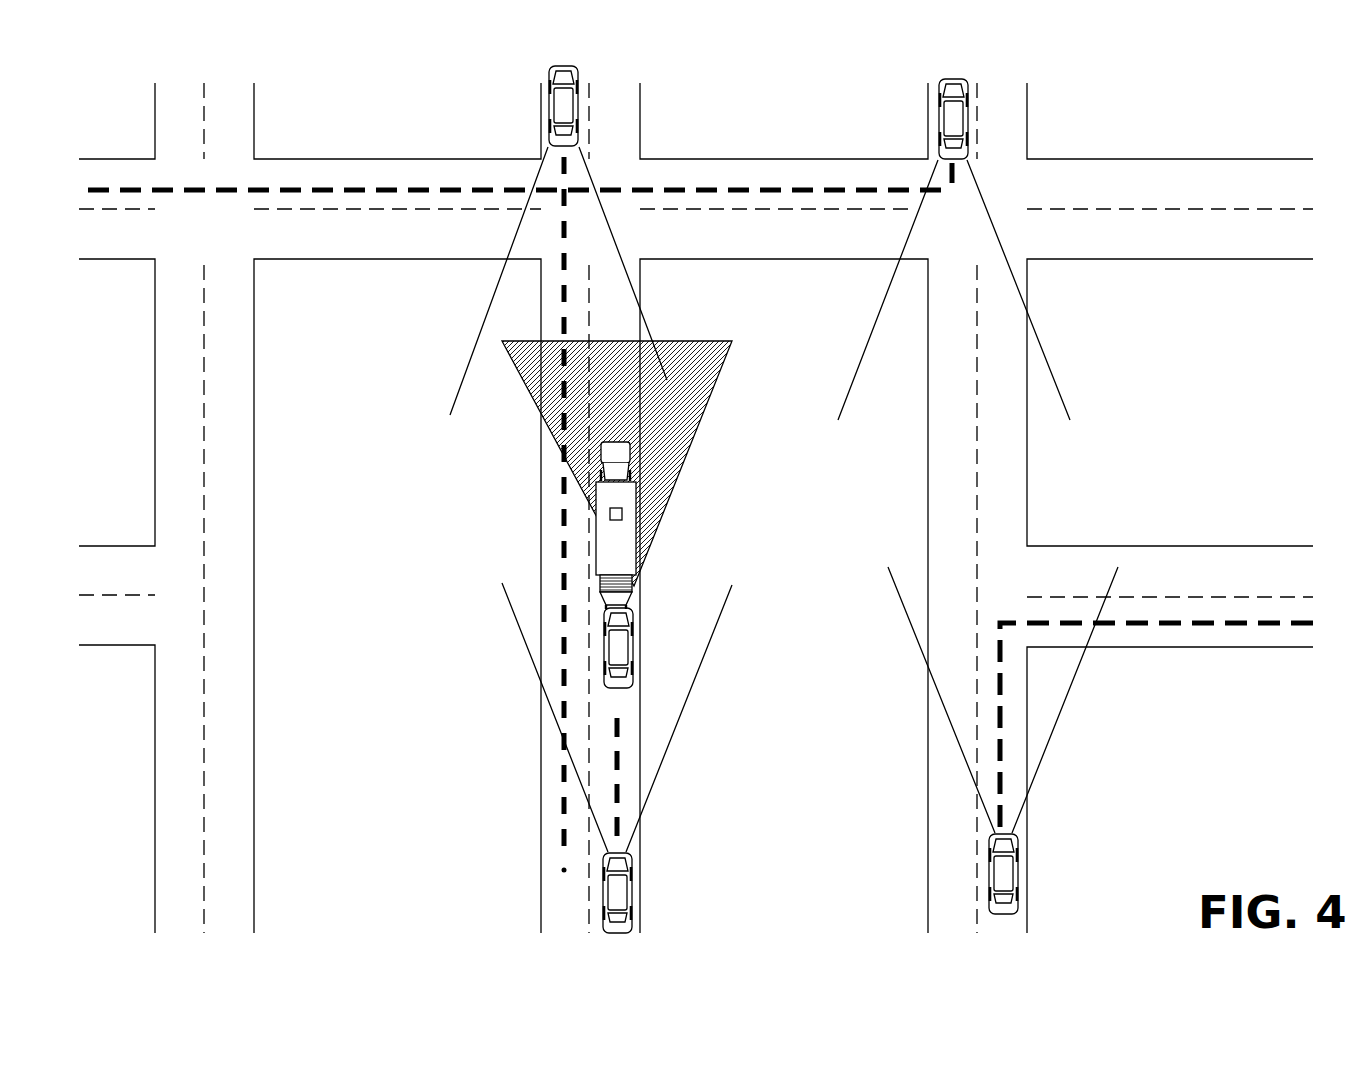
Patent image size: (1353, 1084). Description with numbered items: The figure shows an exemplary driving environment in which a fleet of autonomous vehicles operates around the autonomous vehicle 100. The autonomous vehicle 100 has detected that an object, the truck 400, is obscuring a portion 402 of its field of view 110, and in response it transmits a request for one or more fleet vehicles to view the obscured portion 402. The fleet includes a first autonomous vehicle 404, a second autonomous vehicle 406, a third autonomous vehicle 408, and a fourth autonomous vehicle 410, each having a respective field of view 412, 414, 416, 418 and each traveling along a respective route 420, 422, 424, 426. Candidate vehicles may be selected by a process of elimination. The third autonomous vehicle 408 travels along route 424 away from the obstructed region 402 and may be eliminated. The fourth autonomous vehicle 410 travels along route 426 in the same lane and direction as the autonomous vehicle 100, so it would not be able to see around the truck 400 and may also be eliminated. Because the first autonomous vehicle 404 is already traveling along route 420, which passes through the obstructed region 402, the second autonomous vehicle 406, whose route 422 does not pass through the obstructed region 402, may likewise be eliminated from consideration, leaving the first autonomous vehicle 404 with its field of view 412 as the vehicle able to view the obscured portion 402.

The autonomous vehicle 100 is at (640, 648).
The field of view 110 is at (636, 597).
The truck 400 is at (650, 490).
The obscured portion 402 is at (617, 463).
The first autonomous vehicle 404 is at (544, 107).
The second autonomous vehicle 406 is at (977, 133).
The third autonomous vehicle 408 is at (1025, 872).
The fourth autonomous vehicle 410 is at (640, 883).
The field of view 412 is at (478, 322).
The field of view 414 is at (861, 342).
The field of view 416 is at (1064, 732).
The field of view 418 is at (659, 793).
The route 420 is at (556, 280).
The route 422 is at (710, 184).
The route 424 is at (1160, 632).
The route 426 is at (629, 803).